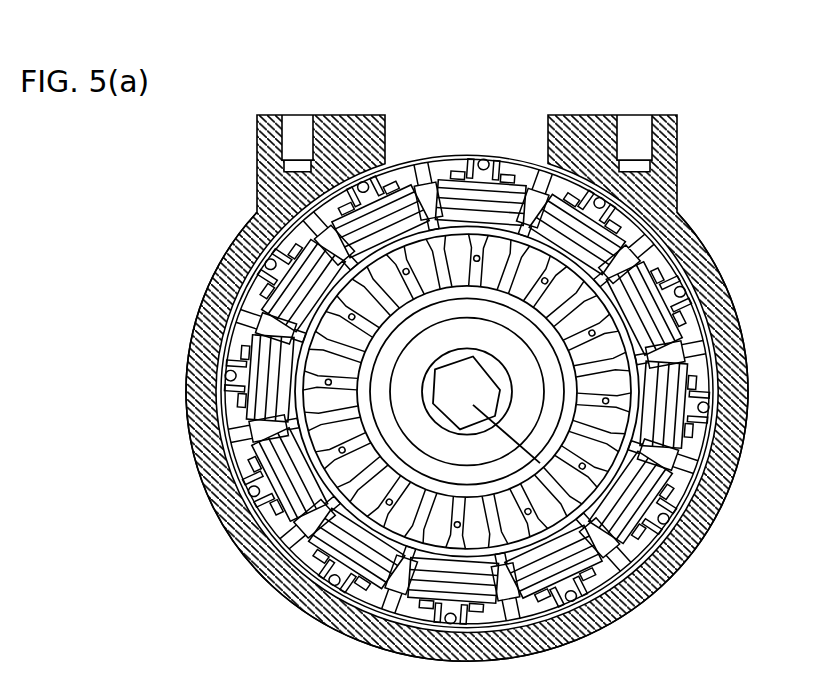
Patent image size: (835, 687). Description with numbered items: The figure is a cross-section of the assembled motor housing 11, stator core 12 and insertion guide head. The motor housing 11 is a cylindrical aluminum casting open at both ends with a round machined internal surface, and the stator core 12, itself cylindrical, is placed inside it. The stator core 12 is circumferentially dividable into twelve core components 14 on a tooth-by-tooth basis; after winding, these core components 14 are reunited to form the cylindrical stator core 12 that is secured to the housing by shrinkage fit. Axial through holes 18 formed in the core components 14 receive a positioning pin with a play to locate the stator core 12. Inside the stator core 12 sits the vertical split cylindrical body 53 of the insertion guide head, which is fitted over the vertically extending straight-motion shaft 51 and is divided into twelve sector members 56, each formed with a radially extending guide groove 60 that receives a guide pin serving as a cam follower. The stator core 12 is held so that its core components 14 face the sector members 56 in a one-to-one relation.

The motor housing 11 is at (693, 233).
The stator core 12 is at (483, 128).
The core component 14 is at (455, 153).
The axial through hole 18 is at (667, 283).
The straight-motion shaft 51 is at (710, 515).
The vertical split cylindrical body 53 is at (407, 230).
The sector member 56 is at (450, 243).
The guide groove 60 is at (585, 373).